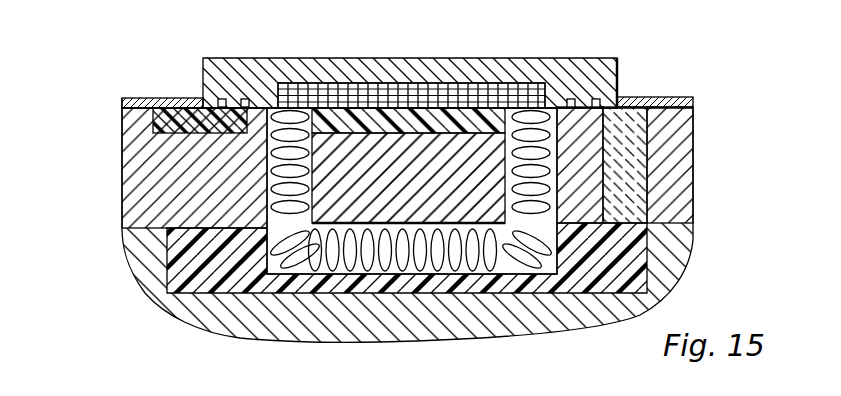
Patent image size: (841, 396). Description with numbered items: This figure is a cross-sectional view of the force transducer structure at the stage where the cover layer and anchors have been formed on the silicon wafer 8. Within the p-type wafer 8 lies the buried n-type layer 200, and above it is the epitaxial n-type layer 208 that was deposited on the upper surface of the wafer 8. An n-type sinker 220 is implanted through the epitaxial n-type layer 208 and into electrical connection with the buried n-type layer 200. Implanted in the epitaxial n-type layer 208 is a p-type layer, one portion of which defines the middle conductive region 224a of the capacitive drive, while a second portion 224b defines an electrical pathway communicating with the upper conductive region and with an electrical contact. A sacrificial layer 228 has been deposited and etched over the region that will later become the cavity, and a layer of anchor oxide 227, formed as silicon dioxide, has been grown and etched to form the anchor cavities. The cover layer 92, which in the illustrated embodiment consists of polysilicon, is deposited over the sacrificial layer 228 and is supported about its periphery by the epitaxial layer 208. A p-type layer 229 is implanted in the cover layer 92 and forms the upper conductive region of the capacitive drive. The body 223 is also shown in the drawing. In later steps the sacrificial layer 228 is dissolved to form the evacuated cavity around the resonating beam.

The silicon wafer 8 is at (663, 273).
The buried n-type layer 200 is at (353, 279).
The body 223 is at (266, 173).
The epitaxial n-type layer 208 is at (672, 163).
The n-type sinker 220 is at (627, 127).
The middle conductive region 224a is at (352, 113).
The second portion of p-type layer 224b is at (163, 130).
The cover layer 92 is at (507, 58).
The p-type layer in cover layer 229 is at (588, 84).
The sacrificial layer 228 is at (437, 92).
The anchor oxide 227 is at (172, 100).